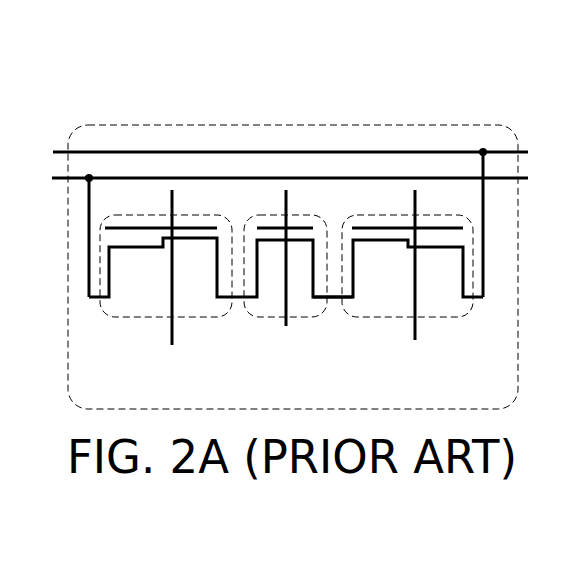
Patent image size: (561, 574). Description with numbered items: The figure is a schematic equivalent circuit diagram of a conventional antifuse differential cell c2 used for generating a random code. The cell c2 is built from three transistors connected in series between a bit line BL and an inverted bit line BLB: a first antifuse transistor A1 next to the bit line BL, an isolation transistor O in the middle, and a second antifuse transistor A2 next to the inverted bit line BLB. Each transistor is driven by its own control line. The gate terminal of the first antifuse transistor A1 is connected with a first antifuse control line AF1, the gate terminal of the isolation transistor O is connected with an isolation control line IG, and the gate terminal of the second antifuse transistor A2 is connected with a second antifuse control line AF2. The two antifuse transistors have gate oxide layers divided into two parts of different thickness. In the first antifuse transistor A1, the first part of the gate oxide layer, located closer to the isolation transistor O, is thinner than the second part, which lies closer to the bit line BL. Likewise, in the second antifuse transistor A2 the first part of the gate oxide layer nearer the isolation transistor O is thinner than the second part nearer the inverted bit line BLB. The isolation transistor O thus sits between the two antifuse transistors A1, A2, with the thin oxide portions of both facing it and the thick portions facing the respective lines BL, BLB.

The inverted bit line BLB is at (266, 216).
The bit line BL is at (270, 230).
The first antifuse transistor A1 is at (126, 316).
The first antifuse control line AF1 is at (184, 281).
The isolation control line IG is at (285, 275).
The isolation transistor O is at (317, 302).
The second antifuse control line AF2 is at (417, 281).
The second antifuse transistor A2 is at (449, 311).
The antifuse differential cell c2 is at (350, 392).